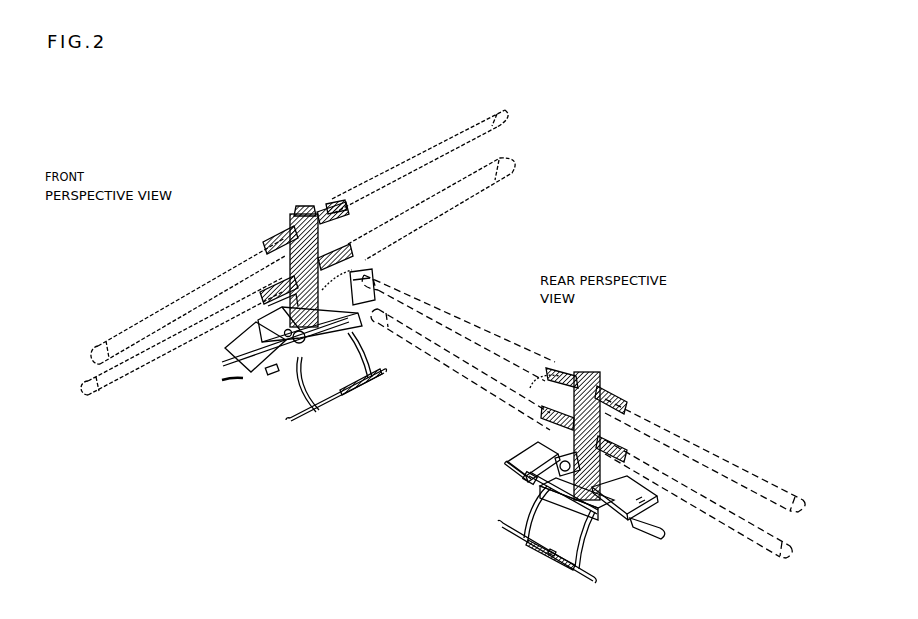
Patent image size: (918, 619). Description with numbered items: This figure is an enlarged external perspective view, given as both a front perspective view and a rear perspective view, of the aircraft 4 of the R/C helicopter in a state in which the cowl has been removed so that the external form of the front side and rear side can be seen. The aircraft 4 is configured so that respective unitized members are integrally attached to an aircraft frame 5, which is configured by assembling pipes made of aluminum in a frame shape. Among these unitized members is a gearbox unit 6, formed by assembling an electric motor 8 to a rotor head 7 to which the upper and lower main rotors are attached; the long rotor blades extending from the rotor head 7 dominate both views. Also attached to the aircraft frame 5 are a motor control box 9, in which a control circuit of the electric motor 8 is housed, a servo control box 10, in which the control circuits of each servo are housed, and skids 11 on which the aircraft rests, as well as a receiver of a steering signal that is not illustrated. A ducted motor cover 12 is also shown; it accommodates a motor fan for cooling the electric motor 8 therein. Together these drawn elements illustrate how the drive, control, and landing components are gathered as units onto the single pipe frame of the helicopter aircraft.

The aircraft 4 is at (344, 162).
The aircraft frame 5 is at (338, 340).
The gearbox unit 6 is at (347, 290).
The rotor head 7 is at (324, 216).
The electric motor 8 is at (273, 342).
The motor control box 9 is at (253, 377).
The servo control box 10 is at (375, 278).
The skids 11 is at (327, 411).
The ducted motor cover 12 is at (283, 361).